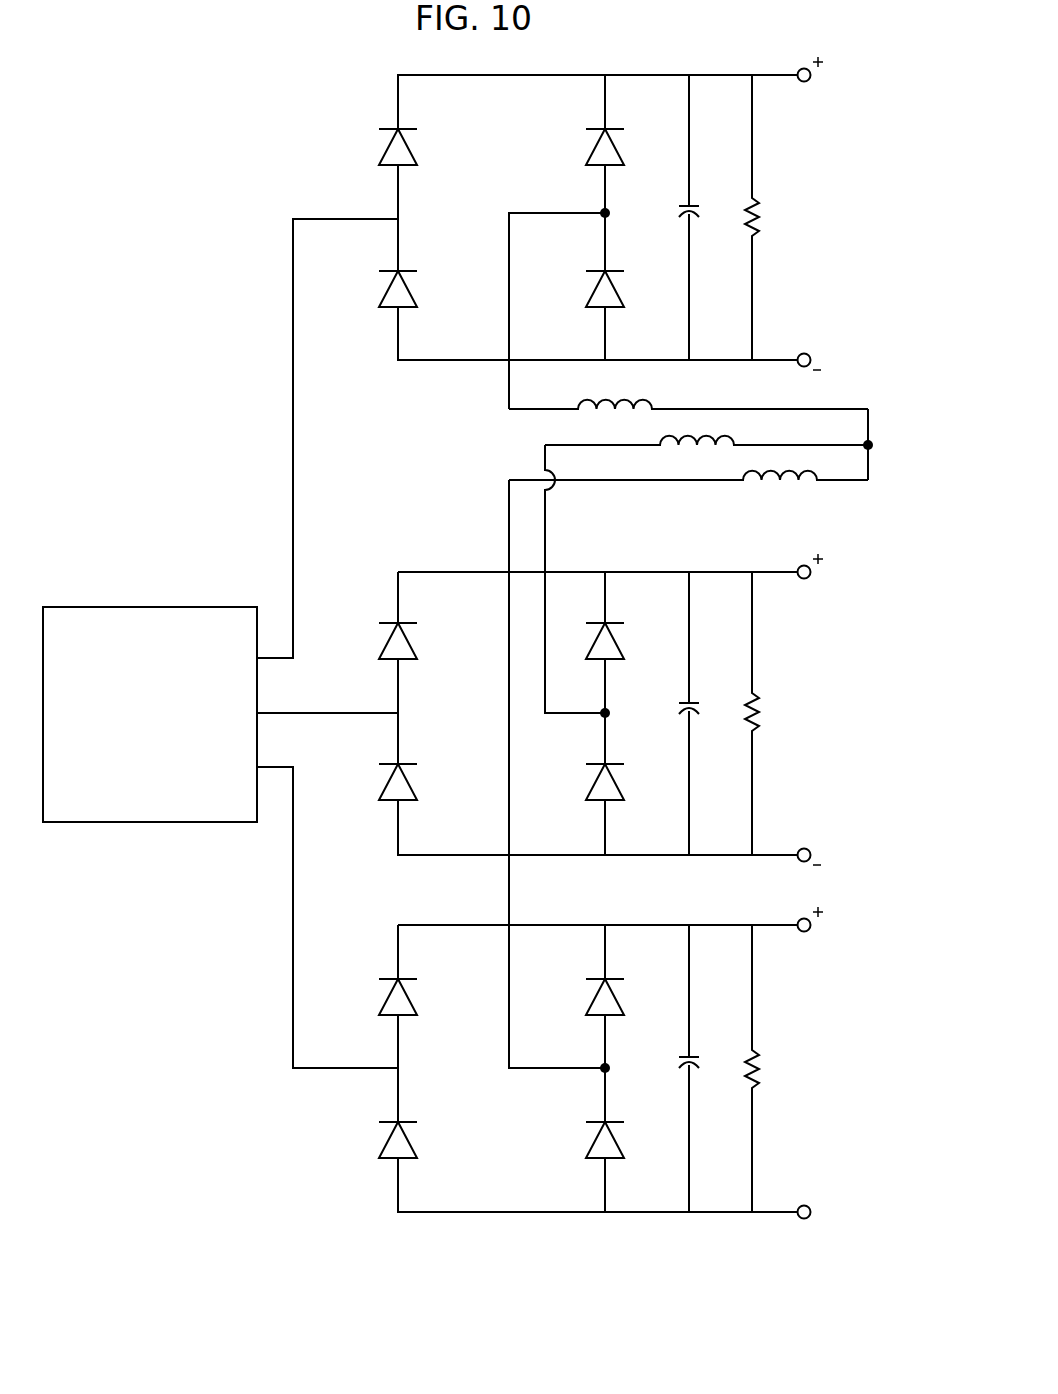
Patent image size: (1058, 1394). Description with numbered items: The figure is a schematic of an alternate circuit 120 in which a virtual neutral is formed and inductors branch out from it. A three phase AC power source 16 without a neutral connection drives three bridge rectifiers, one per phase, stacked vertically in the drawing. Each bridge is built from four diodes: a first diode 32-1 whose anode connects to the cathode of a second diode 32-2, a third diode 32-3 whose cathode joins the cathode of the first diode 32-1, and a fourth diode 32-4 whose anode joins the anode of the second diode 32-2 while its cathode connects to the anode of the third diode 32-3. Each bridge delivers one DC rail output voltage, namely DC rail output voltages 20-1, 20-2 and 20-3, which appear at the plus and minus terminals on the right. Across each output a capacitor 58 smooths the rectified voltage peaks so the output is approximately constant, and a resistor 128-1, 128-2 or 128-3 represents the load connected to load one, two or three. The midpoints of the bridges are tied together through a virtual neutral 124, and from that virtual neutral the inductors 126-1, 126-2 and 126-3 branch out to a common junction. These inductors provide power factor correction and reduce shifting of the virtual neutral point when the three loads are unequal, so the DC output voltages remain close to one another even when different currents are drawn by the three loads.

The circuit 120 is at (148, 336).
The three phase AC power source 16 is at (95, 607).
The first diode 32-1 is at (408, 152).
The second diode 32-2 is at (408, 294).
The third diode 32-3 is at (598, 152).
The fourth diode 32-4 is at (598, 294).
The capacitor 58 is at (687, 204).
The DC rail output voltage 20-1 is at (762, 78).
The DC rail output voltage 20-2 is at (767, 574).
The DC rail output voltage 20-3 is at (762, 928).
The virtual neutral 124 is at (508, 515).
The inductor 126-1 is at (615, 412).
The inductor 126-2 is at (697, 447).
The inductor 126-3 is at (777, 483).
The resistor 128-1 is at (753, 201).
The resistor 128-2 is at (752, 696).
The resistor 128-3 is at (753, 1052).